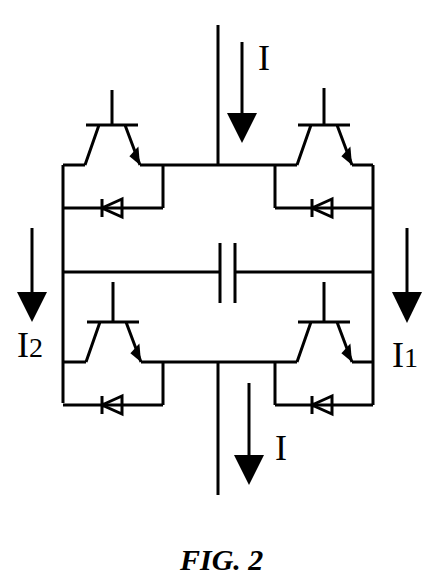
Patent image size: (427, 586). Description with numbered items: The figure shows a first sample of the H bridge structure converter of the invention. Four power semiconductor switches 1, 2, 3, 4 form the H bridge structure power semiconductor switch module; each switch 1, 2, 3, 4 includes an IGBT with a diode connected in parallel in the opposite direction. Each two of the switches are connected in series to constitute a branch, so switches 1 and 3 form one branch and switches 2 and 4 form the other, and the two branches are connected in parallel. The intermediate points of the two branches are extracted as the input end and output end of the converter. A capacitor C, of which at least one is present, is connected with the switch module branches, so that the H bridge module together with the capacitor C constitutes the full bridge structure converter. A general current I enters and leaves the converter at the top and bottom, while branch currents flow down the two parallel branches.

The power semiconductor switch 1 is at (125, 153).
The power semiconductor switch 2 is at (309, 152).
The power semiconductor switch 3 is at (124, 348).
The power semiconductor switch 4 is at (311, 348).
The capacitor C is at (218, 261).